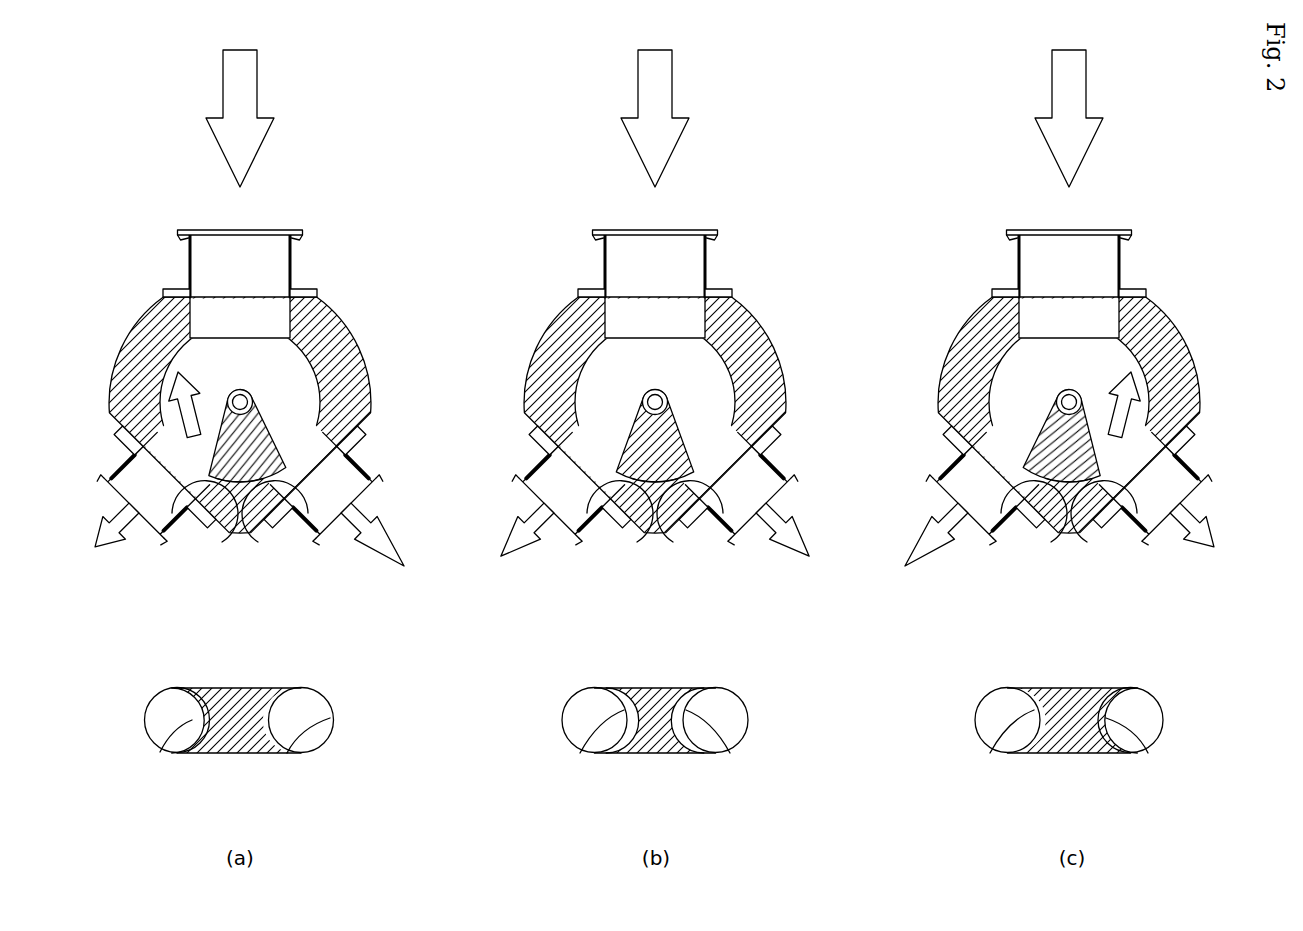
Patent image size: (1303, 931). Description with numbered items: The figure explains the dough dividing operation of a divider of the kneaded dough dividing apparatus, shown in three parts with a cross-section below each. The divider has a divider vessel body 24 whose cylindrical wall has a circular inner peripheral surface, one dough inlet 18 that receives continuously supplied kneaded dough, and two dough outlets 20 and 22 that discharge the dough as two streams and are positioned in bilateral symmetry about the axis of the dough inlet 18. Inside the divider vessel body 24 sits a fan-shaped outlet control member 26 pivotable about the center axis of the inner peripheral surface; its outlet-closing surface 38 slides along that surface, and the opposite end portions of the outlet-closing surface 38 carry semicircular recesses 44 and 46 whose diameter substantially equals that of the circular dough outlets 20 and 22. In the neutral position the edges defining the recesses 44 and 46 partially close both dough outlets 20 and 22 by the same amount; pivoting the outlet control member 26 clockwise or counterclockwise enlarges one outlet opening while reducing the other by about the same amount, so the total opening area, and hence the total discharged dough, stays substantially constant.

The dough inlet 18 is at (292, 306).
The dough outlet 20 is at (158, 432).
The dough outlet 22 is at (362, 430).
The divider vessel body 24 is at (787, 385).
The outlet control member 26 is at (256, 398).
The outlet-closing surface 38 is at (230, 492).
The semicircular recess 44 is at (178, 514).
The semicircular recess 46 is at (262, 482).